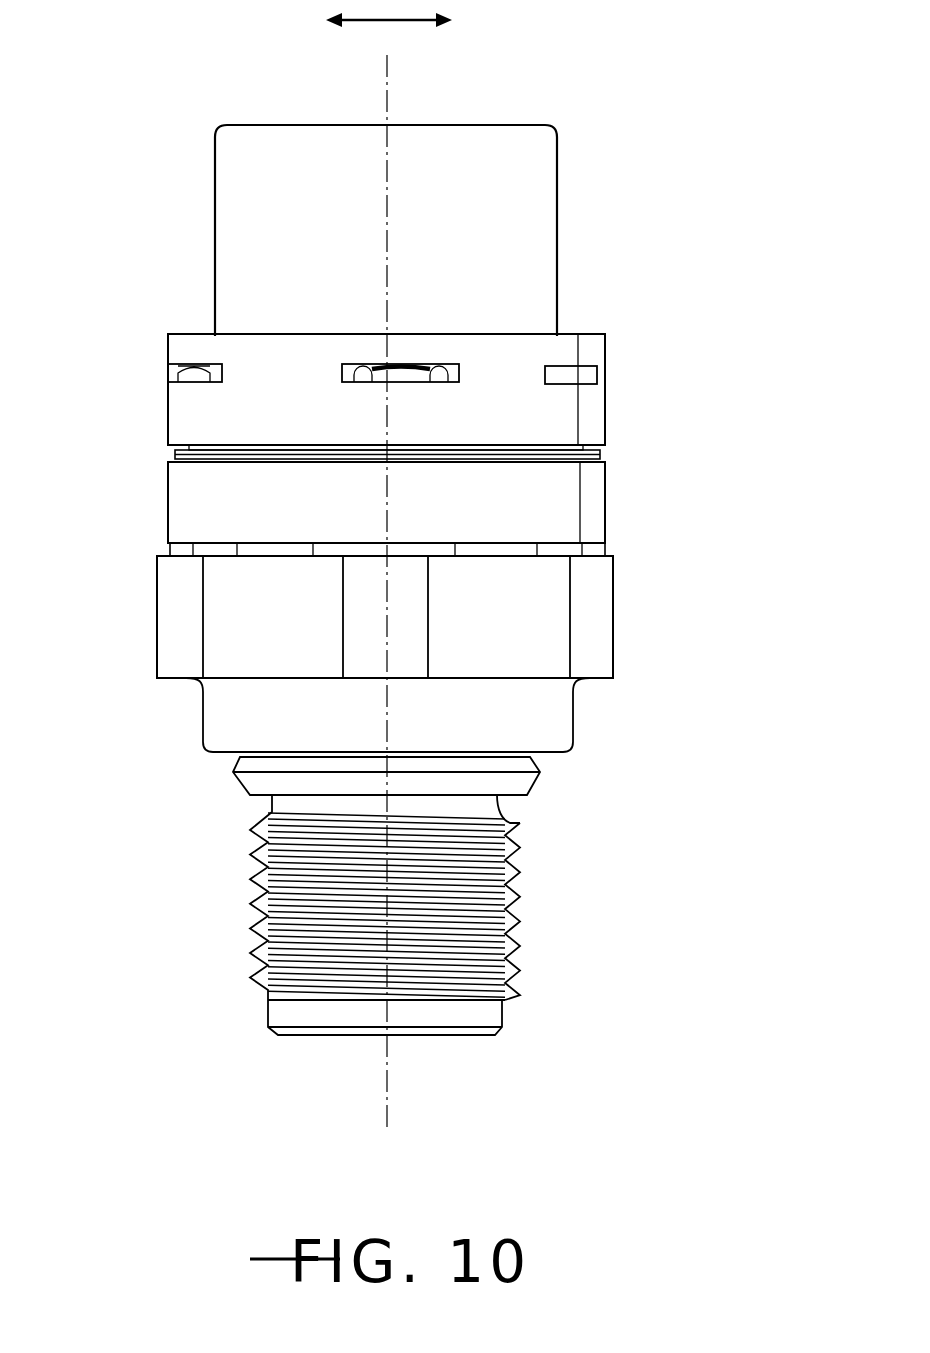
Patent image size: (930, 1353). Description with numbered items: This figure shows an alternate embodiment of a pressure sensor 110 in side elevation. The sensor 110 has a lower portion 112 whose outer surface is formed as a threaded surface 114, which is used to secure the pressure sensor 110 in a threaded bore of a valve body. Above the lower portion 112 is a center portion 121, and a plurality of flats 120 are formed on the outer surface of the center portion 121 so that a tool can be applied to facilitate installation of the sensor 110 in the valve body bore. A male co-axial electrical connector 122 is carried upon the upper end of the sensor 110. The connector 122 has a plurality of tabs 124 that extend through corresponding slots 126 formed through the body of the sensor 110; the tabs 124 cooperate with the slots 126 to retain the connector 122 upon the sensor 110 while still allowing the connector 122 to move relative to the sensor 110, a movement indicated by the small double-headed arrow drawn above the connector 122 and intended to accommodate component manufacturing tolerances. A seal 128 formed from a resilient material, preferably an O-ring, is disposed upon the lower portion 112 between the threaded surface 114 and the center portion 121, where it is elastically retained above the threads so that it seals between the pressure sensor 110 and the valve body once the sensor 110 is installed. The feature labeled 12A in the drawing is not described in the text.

The pressure sensor 110 is at (731, 160).
The lower portion 112 is at (478, 896).
The threaded surface 114 is at (510, 968).
The flats 120 is at (597, 640).
The center portion 121 is at (379, 654).
The male co-axial electrical connector 122 is at (518, 145).
The tabs 124 is at (580, 348).
The slots 126 is at (595, 377).
The seal 128 is at (517, 786).
The contact pin 12A is at (422, 368).